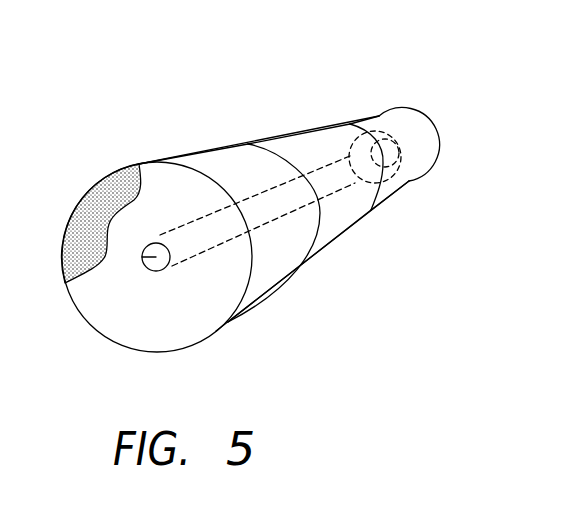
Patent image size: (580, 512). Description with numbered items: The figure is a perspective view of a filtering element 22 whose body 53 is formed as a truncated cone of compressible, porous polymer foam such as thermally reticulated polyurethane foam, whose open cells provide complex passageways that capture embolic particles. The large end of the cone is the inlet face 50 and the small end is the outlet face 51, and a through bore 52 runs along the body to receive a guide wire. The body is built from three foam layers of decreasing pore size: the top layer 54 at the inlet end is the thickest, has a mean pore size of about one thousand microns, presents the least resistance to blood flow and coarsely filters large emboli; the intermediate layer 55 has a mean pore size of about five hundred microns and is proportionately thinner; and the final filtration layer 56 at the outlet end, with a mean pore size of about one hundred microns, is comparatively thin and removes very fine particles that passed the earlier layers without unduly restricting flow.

The filtering element 22 is at (251, 106).
The inlet face 50 is at (205, 322).
The outlet face 51 is at (412, 130).
The through bore 52 is at (142, 257).
The body 53 is at (229, 154).
The top layer 54 is at (277, 257).
The intermediate layer 55 is at (347, 210).
The final filtration layer 56 is at (400, 175).